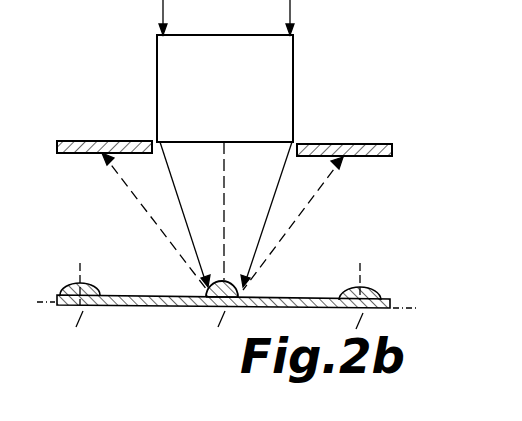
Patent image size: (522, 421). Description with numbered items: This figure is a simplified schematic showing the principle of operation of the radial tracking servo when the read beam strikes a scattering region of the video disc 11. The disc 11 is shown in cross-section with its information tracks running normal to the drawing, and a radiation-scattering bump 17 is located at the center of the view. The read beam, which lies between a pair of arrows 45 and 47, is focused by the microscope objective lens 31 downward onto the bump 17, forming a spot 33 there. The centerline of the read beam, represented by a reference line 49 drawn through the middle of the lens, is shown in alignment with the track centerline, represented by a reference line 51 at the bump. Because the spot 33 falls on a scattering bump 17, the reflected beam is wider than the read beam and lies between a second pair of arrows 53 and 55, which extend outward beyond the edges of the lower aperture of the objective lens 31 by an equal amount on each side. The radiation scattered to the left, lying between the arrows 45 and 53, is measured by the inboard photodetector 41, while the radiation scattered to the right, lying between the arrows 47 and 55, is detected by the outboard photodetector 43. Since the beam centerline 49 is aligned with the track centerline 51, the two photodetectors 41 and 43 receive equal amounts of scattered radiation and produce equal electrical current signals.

The video disc 11 is at (143, 270).
The light-scattering region (bump) 17 is at (243, 292).
The microscope objective lens 31 is at (293, 80).
The spot 33 is at (210, 305).
The inboard photodetector 41 is at (118, 113).
The outboard photodetector 43 is at (338, 144).
The arrow (read beam boundary) 45 is at (173, 183).
The arrow (read beam boundary) 47 is at (278, 182).
The reference line (read beam centerline) 49 is at (222, 170).
The reference line (track centerline) 51 is at (230, 303).
The arrow (reflected beam boundary) 53 is at (140, 205).
The arrow (reflected beam boundary) 55 is at (315, 195).